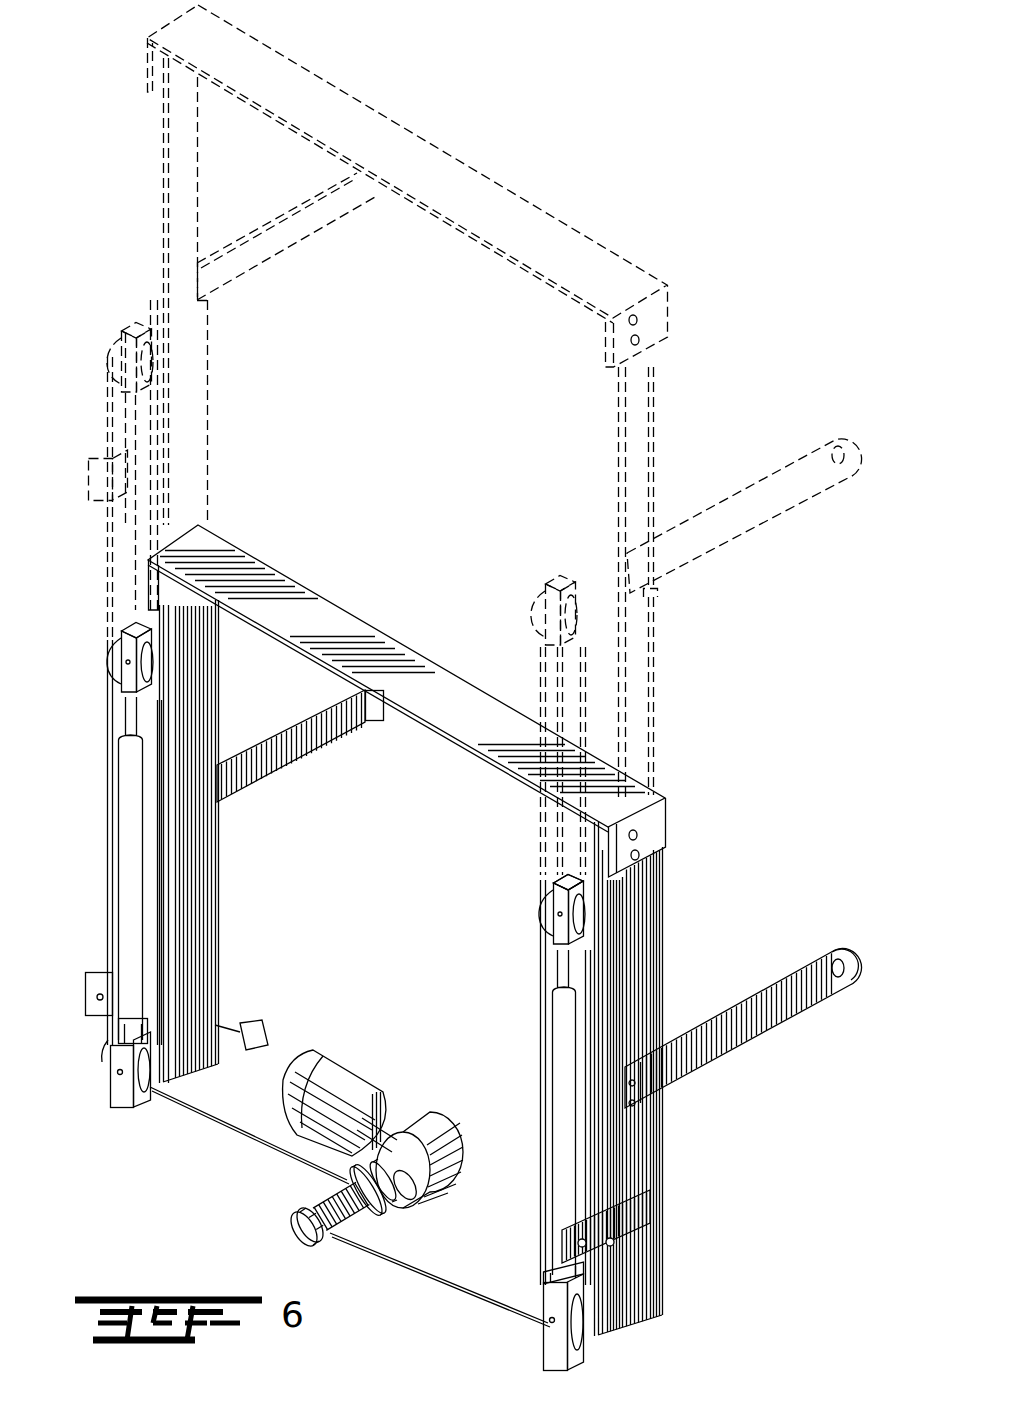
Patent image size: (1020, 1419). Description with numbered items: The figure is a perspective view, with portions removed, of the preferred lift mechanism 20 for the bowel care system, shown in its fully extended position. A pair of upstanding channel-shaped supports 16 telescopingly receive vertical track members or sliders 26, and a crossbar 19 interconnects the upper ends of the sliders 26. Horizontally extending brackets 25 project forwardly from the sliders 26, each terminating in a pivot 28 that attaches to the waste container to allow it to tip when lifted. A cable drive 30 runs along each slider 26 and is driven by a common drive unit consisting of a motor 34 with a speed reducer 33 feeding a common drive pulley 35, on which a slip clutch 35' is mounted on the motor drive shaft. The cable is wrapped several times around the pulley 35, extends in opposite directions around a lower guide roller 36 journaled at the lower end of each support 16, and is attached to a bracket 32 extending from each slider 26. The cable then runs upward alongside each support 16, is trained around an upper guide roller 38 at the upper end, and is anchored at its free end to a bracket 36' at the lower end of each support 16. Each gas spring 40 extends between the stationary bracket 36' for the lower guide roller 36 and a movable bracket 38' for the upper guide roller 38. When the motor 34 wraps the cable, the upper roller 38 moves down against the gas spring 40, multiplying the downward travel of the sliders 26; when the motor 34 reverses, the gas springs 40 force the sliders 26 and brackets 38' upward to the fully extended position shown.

The support 16 is at (207, 445).
The crossbar 19 is at (545, 210).
The lift mechanism 20 is at (690, 790).
The bracket 25 is at (800, 503).
The slider 26 is at (655, 412).
The pivot 28 is at (851, 968).
The cable drive 30 is at (536, 1070).
The bracket 32 is at (615, 1242).
The speed reducer 33 is at (440, 1140).
The motor 34 is at (345, 1062).
The common drive pulley 35 is at (302, 1217).
The slip clutch 35' is at (407, 1200).
The lower guide roller 36 is at (343, 1199).
The bracket 36' is at (530, 1277).
The upper guide roller 38 is at (314, 633).
The movable bracket 38' is at (536, 863).
The gas spring 40 is at (130, 838).